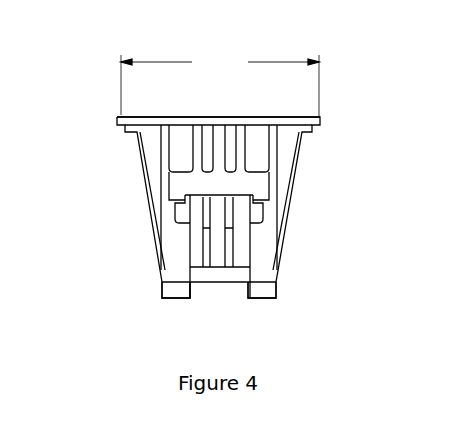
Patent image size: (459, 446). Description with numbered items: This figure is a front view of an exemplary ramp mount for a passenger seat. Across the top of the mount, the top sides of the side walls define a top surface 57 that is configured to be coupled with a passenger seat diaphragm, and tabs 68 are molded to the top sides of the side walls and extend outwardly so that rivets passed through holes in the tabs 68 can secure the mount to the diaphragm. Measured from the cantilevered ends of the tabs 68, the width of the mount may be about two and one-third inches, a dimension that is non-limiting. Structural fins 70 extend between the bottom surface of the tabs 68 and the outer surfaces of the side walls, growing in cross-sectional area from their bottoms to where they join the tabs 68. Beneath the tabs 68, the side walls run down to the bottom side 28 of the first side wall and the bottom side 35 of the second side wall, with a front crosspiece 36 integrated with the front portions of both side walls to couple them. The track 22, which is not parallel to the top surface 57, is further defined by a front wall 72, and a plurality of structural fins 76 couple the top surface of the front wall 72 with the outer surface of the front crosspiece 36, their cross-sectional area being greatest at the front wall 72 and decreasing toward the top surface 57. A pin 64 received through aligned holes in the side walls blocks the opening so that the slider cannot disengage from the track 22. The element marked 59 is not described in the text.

The track 22 is at (212, 306).
The bottom side of first side wall 28 is at (265, 266).
The bottom side of second side wall 35 is at (181, 268).
The front crosspiece 36 is at (255, 145).
The top surface 57 is at (147, 78).
The internal ribs 59 is at (217, 242).
The pin 64 is at (168, 197).
The tabs 68 is at (120, 120).
The structural fins 70 is at (156, 153).
The front wall 72 is at (203, 181).
The structural fins 76 is at (218, 143).